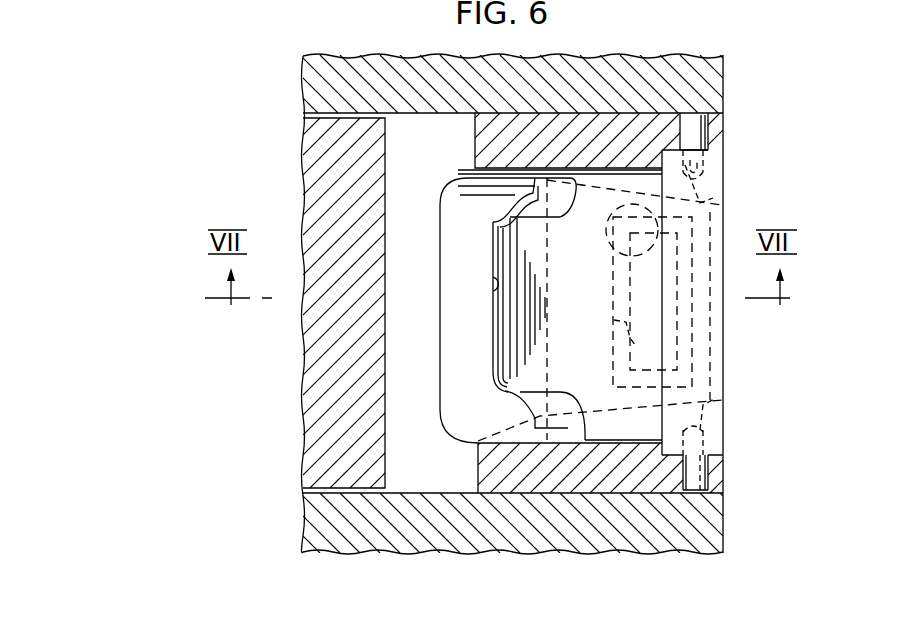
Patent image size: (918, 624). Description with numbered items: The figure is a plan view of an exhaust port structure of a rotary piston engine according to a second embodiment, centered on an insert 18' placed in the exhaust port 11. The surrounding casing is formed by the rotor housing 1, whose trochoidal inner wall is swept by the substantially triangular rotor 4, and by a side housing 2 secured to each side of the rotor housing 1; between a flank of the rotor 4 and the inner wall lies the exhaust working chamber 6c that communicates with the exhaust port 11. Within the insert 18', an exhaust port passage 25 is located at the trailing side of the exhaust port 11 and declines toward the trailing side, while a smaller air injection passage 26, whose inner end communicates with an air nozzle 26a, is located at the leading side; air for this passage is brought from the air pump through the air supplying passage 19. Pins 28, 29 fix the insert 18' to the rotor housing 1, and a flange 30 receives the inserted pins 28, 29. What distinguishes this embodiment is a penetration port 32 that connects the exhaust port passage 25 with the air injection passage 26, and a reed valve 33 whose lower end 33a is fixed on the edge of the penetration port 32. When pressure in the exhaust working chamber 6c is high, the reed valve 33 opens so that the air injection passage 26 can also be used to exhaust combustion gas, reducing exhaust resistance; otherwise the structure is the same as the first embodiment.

The rotor housing 1 is at (723, 132).
The side housing 2 is at (318, 83).
The rotor 4 is at (320, 169).
The working chamber 6c is at (428, 203).
The exhaust port 11 is at (479, 236).
The insert 18' is at (685, 290).
The air supplying passage 19 is at (608, 235).
The exhaust port passage 25 is at (478, 443).
The air injection passage 26 is at (520, 400).
The air nozzle 26a is at (496, 290).
The pin 28 is at (705, 116).
The pin 29 is at (708, 473).
The flange 30 is at (718, 424).
The penetration port 32 is at (614, 350).
The reed valve 33 is at (692, 358).
The lower end 33a is at (614, 320).